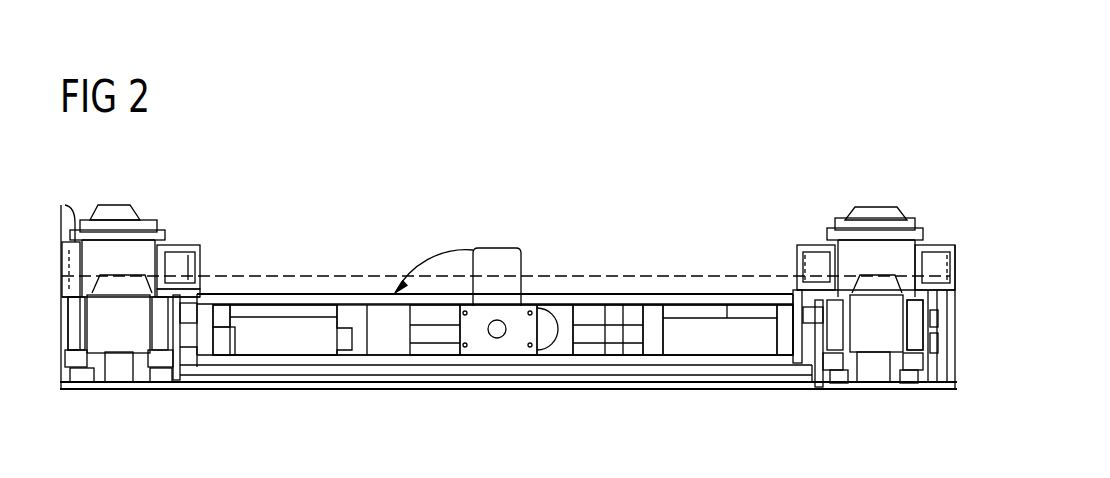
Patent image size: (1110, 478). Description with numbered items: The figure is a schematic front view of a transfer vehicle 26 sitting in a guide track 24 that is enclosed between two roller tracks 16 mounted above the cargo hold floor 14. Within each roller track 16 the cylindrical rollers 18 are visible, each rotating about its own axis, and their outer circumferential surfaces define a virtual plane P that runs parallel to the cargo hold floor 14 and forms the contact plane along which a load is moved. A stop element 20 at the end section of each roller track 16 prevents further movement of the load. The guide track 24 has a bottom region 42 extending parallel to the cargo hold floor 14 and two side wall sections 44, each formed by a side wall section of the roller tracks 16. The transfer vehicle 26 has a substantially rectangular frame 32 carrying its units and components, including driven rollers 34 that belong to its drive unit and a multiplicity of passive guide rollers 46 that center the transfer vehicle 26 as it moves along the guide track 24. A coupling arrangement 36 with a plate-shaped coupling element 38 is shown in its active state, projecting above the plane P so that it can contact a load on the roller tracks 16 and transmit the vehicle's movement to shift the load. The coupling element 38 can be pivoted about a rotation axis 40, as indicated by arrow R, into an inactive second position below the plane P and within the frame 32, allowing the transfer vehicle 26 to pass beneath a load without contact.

The cargo hold floor 14 is at (937, 390).
The roller tracks 16 is at (88, 372).
The cylindrical rollers 18 is at (122, 288).
The stop element 20 is at (147, 260).
The guide track 24 is at (183, 392).
The transfer vehicle 26 is at (347, 280).
The frame 32 is at (630, 297).
The driven rollers 34 is at (290, 345).
The coupling arrangement 36 is at (552, 229).
The coupling element 38 is at (497, 258).
The rotation axis 40 is at (498, 337).
The bottom region 42 is at (360, 370).
The side wall sections 44 is at (163, 393).
The passive guide rollers 46 is at (190, 370).
The plane P is at (290, 276).
The arrow R is at (440, 250).